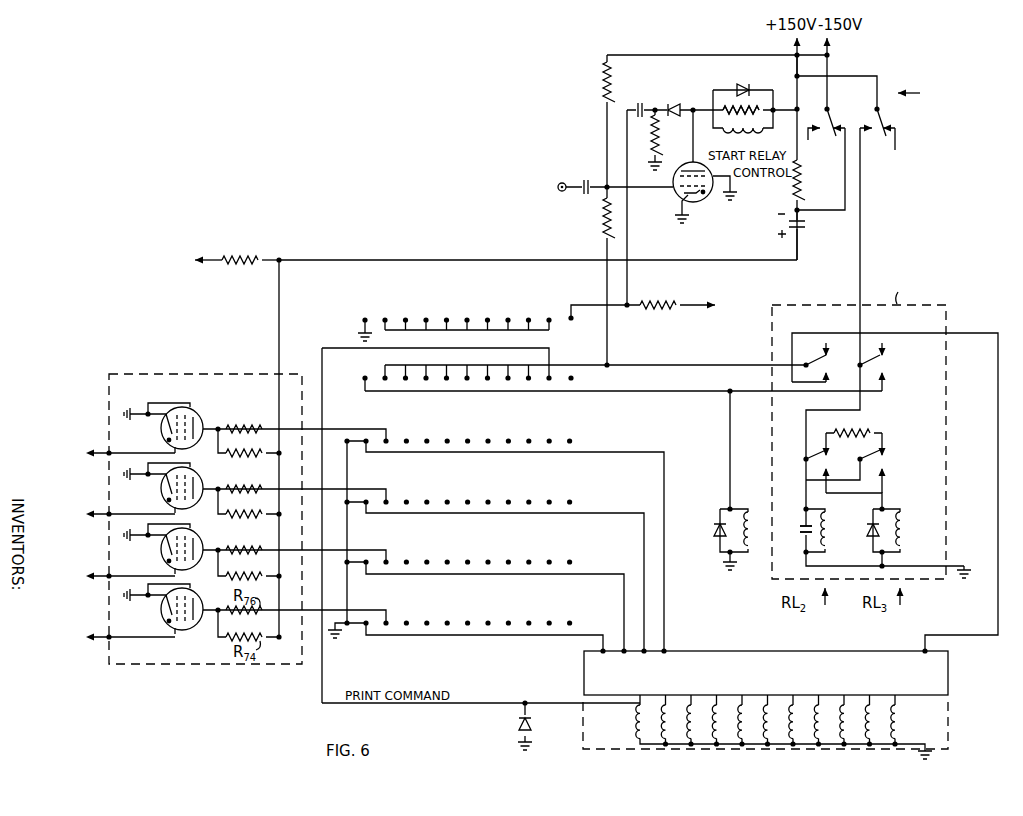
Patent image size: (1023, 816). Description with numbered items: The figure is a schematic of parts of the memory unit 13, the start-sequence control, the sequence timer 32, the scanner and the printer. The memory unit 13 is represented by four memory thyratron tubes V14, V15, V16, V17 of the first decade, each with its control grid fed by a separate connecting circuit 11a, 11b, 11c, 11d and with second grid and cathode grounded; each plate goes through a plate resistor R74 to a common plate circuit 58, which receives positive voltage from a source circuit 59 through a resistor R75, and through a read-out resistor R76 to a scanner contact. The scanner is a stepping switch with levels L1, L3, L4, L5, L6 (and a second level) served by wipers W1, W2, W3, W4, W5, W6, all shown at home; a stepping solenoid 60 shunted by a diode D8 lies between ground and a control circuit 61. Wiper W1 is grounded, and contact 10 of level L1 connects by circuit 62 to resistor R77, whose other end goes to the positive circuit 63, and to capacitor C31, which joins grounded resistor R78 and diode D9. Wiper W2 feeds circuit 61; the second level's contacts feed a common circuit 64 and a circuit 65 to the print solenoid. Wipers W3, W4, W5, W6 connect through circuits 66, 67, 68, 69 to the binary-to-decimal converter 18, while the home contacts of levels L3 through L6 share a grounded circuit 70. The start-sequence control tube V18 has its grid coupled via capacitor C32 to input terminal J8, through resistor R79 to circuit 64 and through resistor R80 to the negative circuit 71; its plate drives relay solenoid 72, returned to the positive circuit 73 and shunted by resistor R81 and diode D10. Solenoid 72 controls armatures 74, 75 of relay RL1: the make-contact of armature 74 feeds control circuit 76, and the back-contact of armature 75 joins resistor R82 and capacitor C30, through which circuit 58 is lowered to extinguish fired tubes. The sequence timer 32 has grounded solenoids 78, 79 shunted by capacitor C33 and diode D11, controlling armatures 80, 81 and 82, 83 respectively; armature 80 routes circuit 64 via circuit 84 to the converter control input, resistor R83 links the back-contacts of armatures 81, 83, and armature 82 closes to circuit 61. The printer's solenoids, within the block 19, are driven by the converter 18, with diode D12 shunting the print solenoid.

The positive voltage circuit 73 is at (793, 48).
The negative voltage circuit 71 is at (829, 48).
The armature of relay RL1 75 is at (831, 120).
The armature of relay RL1 74 is at (884, 120).
The control circuit 76 is at (863, 175).
The relay solenoid 72 is at (745, 107).
The source circuit 59 is at (218, 258).
The common plate circuit 58 is at (277, 312).
The circuit to print solenoid 65 is at (320, 348).
The common circuit 64 is at (568, 364).
The circuit from contact ten 62 is at (596, 304).
The contact 10 is at (595, 323).
The positive voltage circuit 63 is at (693, 308).
The control circuit 61 is at (661, 393).
The stepping solenoid 60 is at (727, 500).
The circuit from wiper W3 66 is at (584, 452).
The circuit from wiper W4 67 is at (584, 513).
The circuit from wiper W5 68 is at (584, 574).
The circuit from wiper W6 69 is at (584, 635).
The common grounded circuit 70 is at (347, 590).
The memory unit 13 is at (218, 666).
The binary-to-decimal code converter 18 is at (950, 674).
The solenoid block SL1-SL11 19 is at (950, 727).
The sequence timer 32 is at (949, 311).
The circuit to converter control input 84 is at (845, 333).
The armature of relay RL2 80 is at (829, 362).
The armature of relay RL3 82 is at (884, 367).
The armature of relay RL2 81 is at (829, 471).
The armature of relay RL3 83 is at (884, 471).
The operating solenoid of relay RL2 78 is at (870, 526).
The operating solenoid of relay RL3 79 is at (886, 537).
The connecting circuit 11a is at (105, 450).
The connecting circuit 11b is at (105, 511).
The connecting circuit 11c is at (105, 573).
The connecting circuit 11d is at (105, 634).
The resistor R80 is at (603, 88).
The resistor R79 is at (603, 225).
The grounded resistor R78 is at (666, 140).
The resistor R81 is at (721, 101).
The resistor R82 is at (800, 185).
The resistor R83 is at (868, 432).
The resistor R75 is at (238, 256).
The read-out resistor R76 is at (258, 423).
The plate resistor R74 is at (258, 459).
The resistor R77 is at (677, 300).
The capacitor C30 is at (802, 226).
The capacitor C31 is at (639, 105).
The capacitor C32 is at (587, 180).
The capacitor C33 is at (800, 527).
The diode D8 is at (715, 526).
The diode D9 is at (684, 94).
The diode D10 is at (745, 90).
The diode D11 is at (868, 540).
The diode D12 is at (533, 722).
The memory thyratron tube V14 is at (171, 428).
The memory thyratron tube V15 is at (171, 488).
The memory thyratron tube V16 is at (171, 549).
The memory thyratron tube V17 is at (171, 609).
The start-sequence control tube V18 is at (705, 199).
The input terminal J8 is at (550, 190).
The relay RL1 is at (924, 93).
The stepping switch level L1 is at (455, 304).
The stepping switch level L3 is at (477, 428).
The stepping switch level L4 is at (477, 489).
The stepping switch level L5 is at (477, 549).
The stepping switch level L6 is at (477, 610).
The wiper W1 is at (360, 331).
The wiper W2 is at (360, 386).
The wiper W3 is at (365, 453).
The wiper W4 is at (365, 514).
The wiper W5 is at (365, 576).
The wiper W6 is at (365, 636).